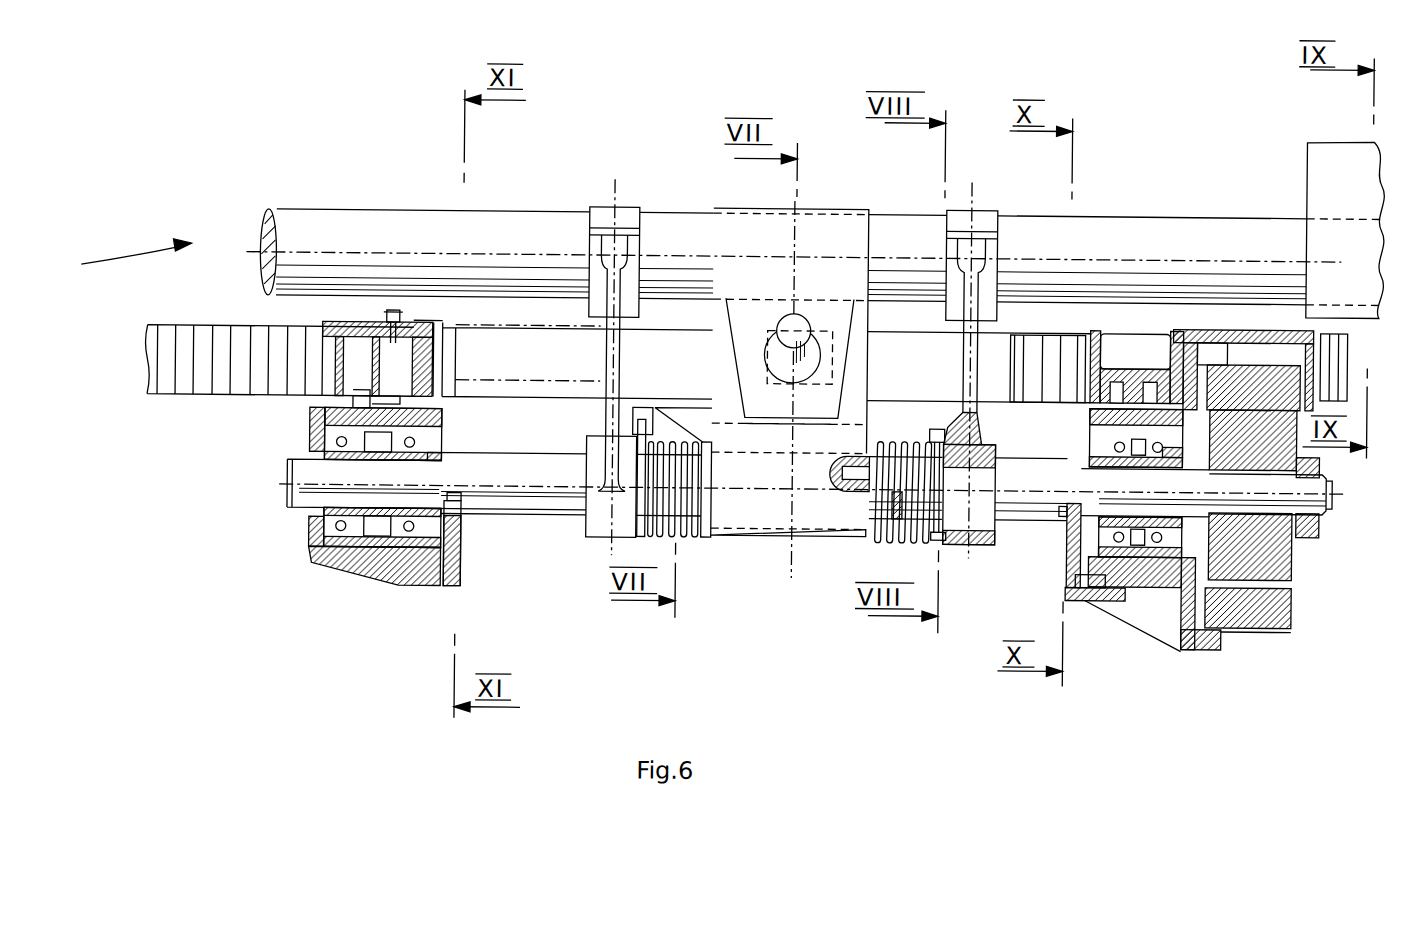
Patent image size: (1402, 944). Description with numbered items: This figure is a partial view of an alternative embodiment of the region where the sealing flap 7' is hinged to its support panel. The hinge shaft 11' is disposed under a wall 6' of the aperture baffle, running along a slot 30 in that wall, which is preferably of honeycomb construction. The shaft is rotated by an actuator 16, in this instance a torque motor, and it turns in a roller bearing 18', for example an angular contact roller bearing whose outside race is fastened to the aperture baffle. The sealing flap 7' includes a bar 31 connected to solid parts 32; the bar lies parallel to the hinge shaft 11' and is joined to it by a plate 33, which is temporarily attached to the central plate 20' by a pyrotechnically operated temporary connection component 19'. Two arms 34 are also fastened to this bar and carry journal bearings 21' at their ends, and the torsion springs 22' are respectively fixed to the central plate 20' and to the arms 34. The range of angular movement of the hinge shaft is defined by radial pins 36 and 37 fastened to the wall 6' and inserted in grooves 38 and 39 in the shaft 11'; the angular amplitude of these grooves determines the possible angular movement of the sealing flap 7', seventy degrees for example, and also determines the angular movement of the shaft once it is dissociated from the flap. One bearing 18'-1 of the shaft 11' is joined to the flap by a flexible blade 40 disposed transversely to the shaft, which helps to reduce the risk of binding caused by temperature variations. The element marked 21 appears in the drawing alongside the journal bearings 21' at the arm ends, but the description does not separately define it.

The wall 6' is at (278, 403).
The sealing flap 7' is at (121, 259).
The hinge shaft 11' is at (811, 516).
The actuator 16 is at (1297, 563).
The roller bearing 18' is at (1215, 502).
The bearing 18'-1 is at (308, 496).
The pyrotechnically operated temporary connection component 19' is at (749, 273).
The central plate 20' is at (752, 361).
The arm 21 is at (964, 391).
The journal bearings 21' is at (596, 548).
The torsion springs 22' is at (783, 545).
The slot 30 is at (1008, 346).
The bar 31 is at (525, 214).
The solid parts 32 is at (1310, 174).
The plate 33 is at (883, 224).
The arms 34 is at (600, 422).
The radial pin 36 is at (1068, 557).
The radial pin 37 is at (462, 506).
The groove 38 is at (1062, 506).
The groove 39 is at (461, 497).
The flexible blade 40 is at (372, 363).